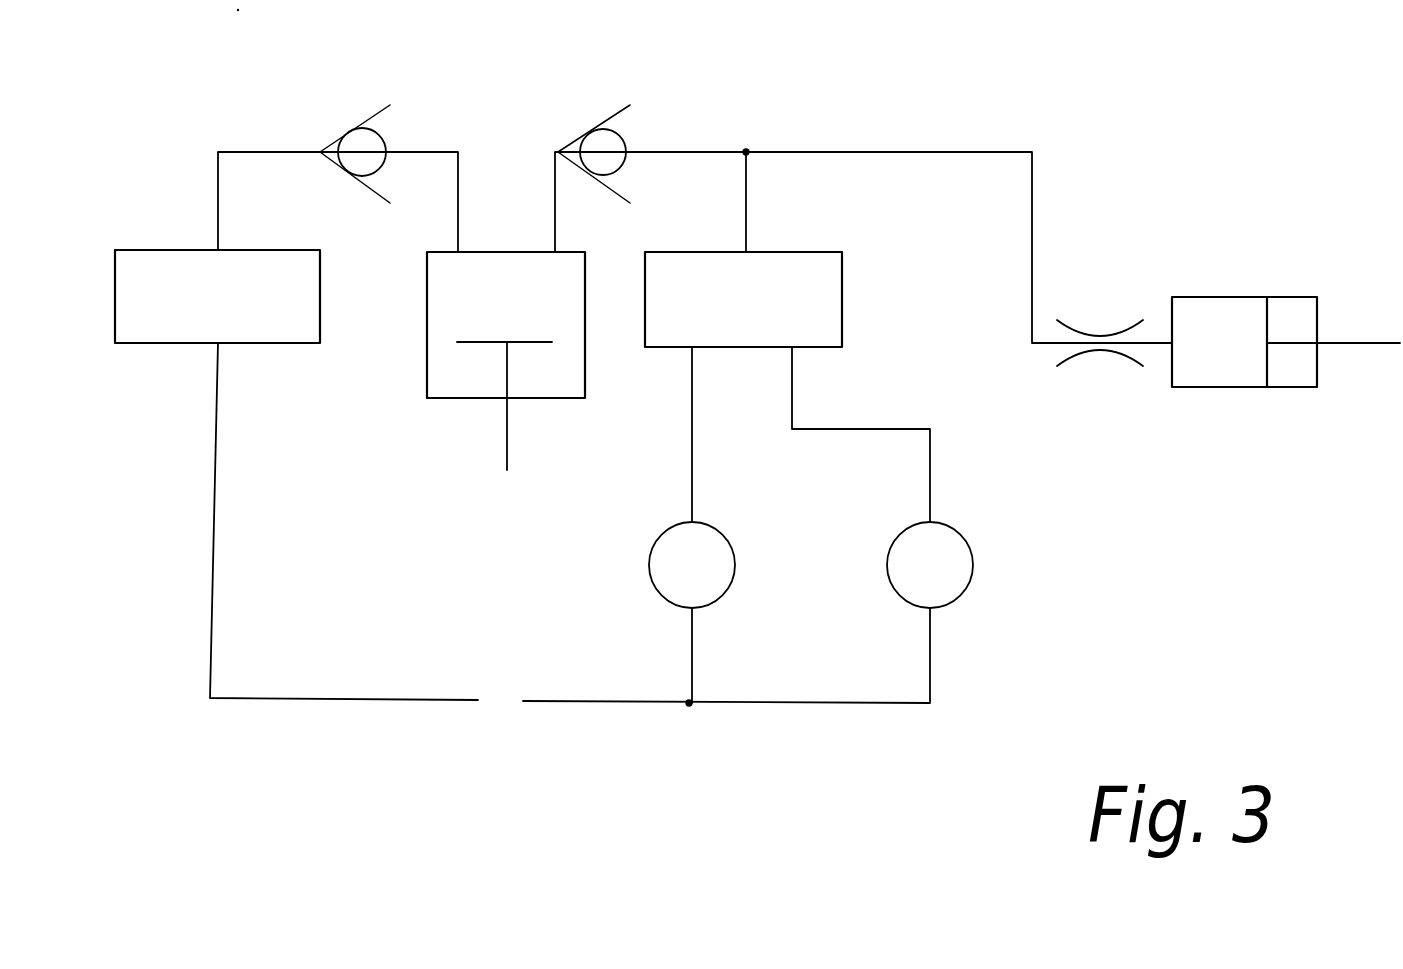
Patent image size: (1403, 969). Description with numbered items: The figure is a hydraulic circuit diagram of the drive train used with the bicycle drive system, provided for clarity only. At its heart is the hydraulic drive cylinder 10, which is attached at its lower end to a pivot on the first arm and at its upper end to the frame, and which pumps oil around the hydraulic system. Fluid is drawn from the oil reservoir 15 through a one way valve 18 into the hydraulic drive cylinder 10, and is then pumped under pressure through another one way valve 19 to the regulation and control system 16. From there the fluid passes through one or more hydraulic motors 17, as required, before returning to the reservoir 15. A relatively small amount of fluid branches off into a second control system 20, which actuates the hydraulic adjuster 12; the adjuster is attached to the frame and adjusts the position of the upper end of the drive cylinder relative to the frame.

The hydraulic drive cylinder 10 is at (440, 378).
The hydraulic adjuster 12 is at (1207, 315).
The oil reservoir 15 is at (280, 333).
The regulation and control system 16 is at (823, 333).
The hydraulic motors 17 is at (712, 580).
The one way valve 18 is at (357, 137).
The one way valve 19 is at (593, 140).
The second control system 20 is at (1092, 335).